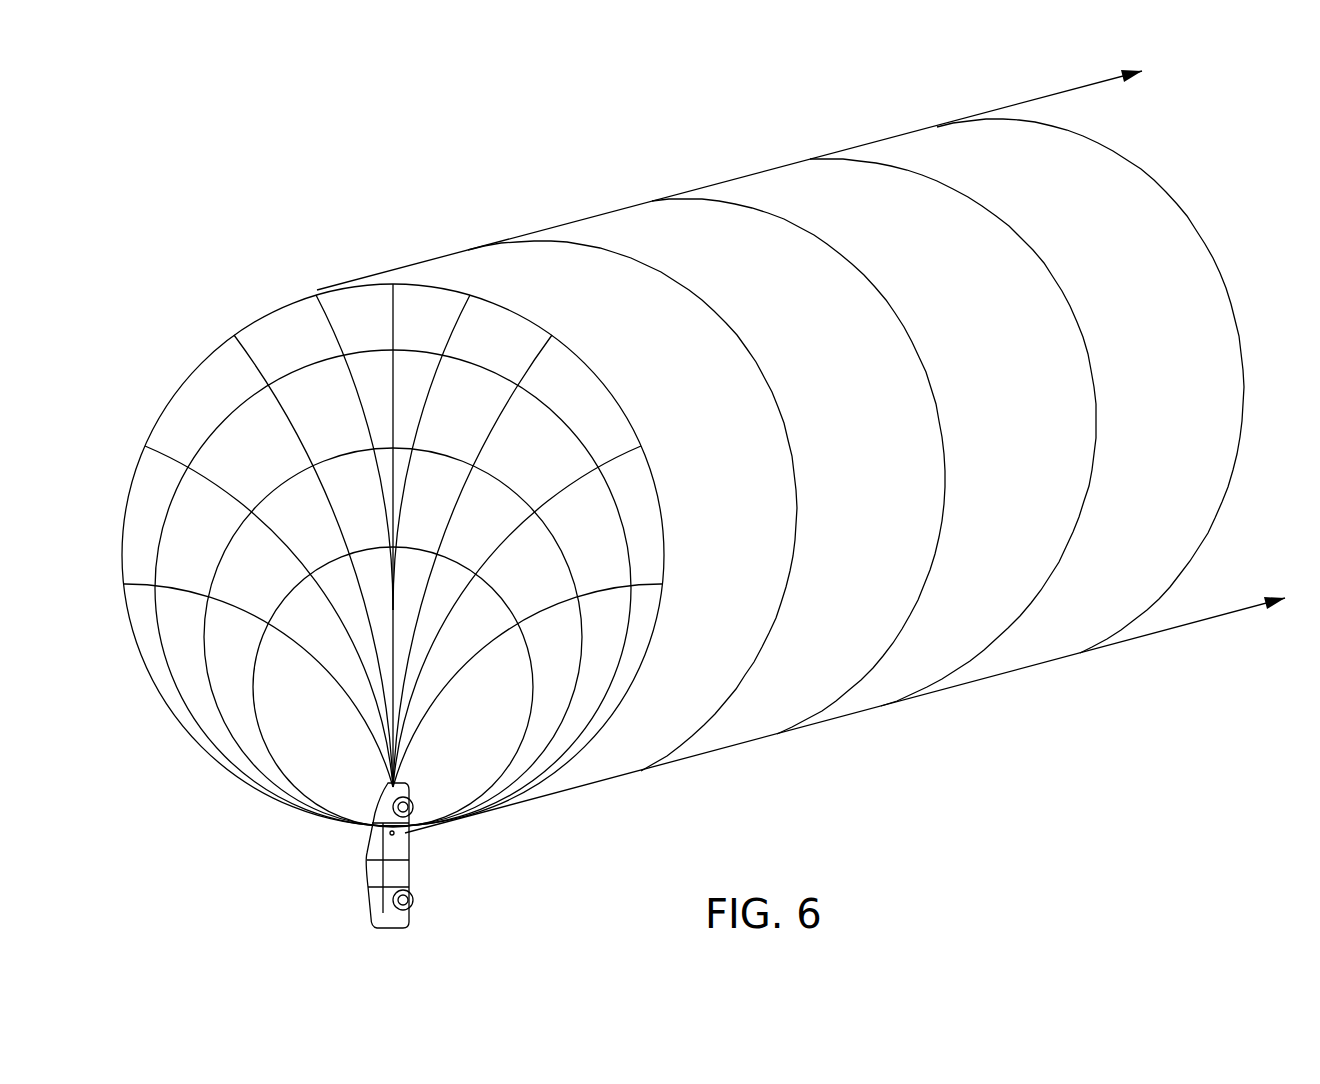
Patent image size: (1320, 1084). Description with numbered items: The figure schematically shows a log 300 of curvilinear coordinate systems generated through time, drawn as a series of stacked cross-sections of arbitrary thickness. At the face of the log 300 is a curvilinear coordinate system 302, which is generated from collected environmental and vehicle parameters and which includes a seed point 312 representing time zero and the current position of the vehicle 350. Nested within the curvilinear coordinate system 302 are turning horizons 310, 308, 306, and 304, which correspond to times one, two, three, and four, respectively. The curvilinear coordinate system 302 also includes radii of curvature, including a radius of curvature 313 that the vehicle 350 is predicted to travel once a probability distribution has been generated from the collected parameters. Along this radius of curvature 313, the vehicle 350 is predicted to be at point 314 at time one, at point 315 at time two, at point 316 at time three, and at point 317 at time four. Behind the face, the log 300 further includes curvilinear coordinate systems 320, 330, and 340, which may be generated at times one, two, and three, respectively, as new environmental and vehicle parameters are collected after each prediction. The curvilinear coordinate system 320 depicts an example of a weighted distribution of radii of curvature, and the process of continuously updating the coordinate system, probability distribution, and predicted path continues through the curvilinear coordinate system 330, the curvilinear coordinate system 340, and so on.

The log of curvilinear coordinate systems 300 is at (243, 172).
The curvilinear coordinate system 302 is at (270, 304).
The turning horizon 304 is at (188, 372).
The turning horizon 306 is at (230, 423).
The turning horizon 308 is at (230, 543).
The turning horizon 310 is at (255, 655).
The seed point 312 is at (394, 835).
The radius of curvature 313 is at (483, 418).
The point 314 is at (440, 551).
The point 315 is at (480, 470).
The point 316 is at (520, 378).
The point 317 is at (552, 337).
The curvilinear coordinate system 320 is at (720, 312).
The curvilinear coordinate system 330 is at (857, 267).
The curvilinear coordinate system 340 is at (1022, 199).
The vehicle 350 is at (366, 882).